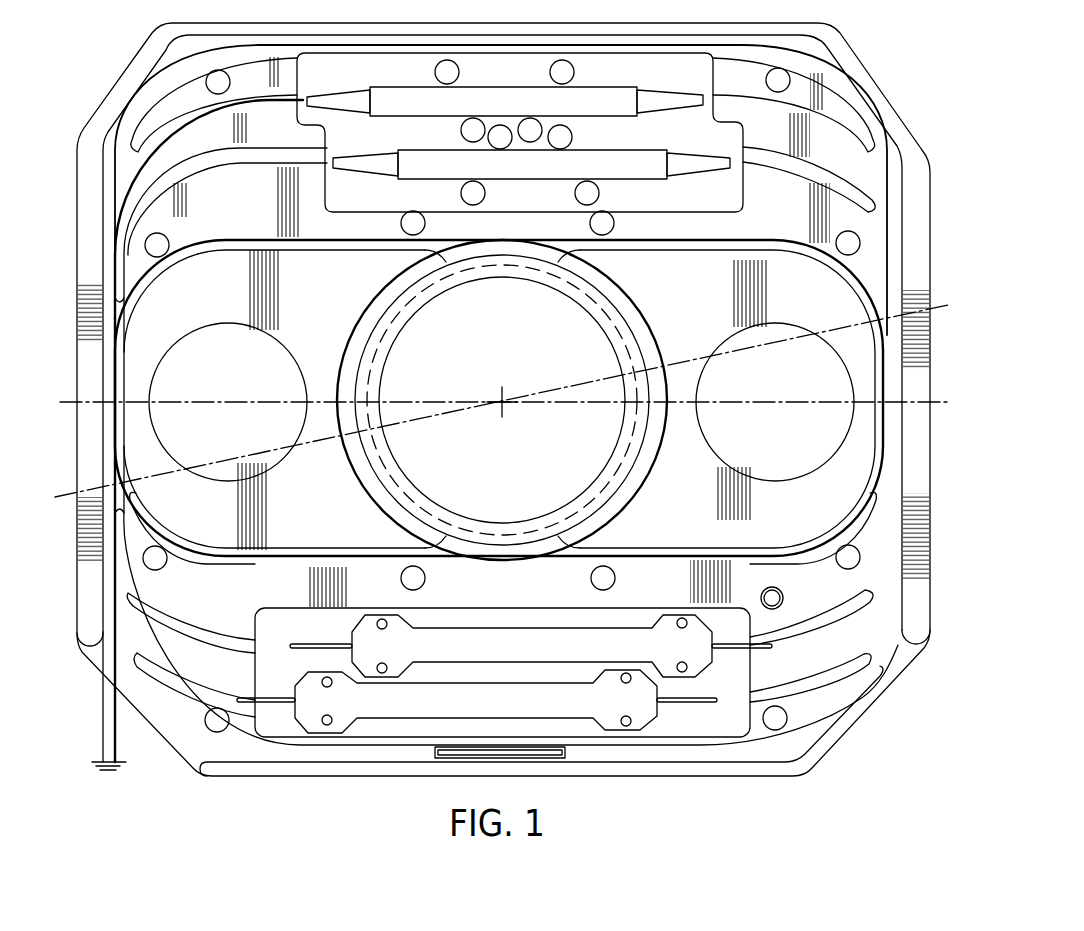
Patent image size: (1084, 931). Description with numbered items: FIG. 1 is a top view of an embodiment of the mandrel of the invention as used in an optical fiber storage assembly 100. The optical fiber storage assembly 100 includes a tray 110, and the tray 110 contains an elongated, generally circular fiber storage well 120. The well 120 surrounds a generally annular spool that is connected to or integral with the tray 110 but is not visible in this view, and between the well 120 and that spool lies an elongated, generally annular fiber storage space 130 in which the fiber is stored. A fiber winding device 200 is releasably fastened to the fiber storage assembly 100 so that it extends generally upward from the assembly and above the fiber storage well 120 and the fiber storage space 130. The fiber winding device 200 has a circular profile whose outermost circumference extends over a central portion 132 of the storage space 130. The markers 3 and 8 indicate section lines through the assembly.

The optical fiber storage assembly 100 is at (972, 508).
The tray 110 is at (938, 590).
The fiber storage well 120 is at (665, 346).
The fiber storage space 130 is at (622, 289).
The central portion 132 is at (370, 498).
The fiber winding device 200 is at (521, 353).
The section line 3- 3 is at (979, 428).
The section line 8- 8 is at (988, 326).